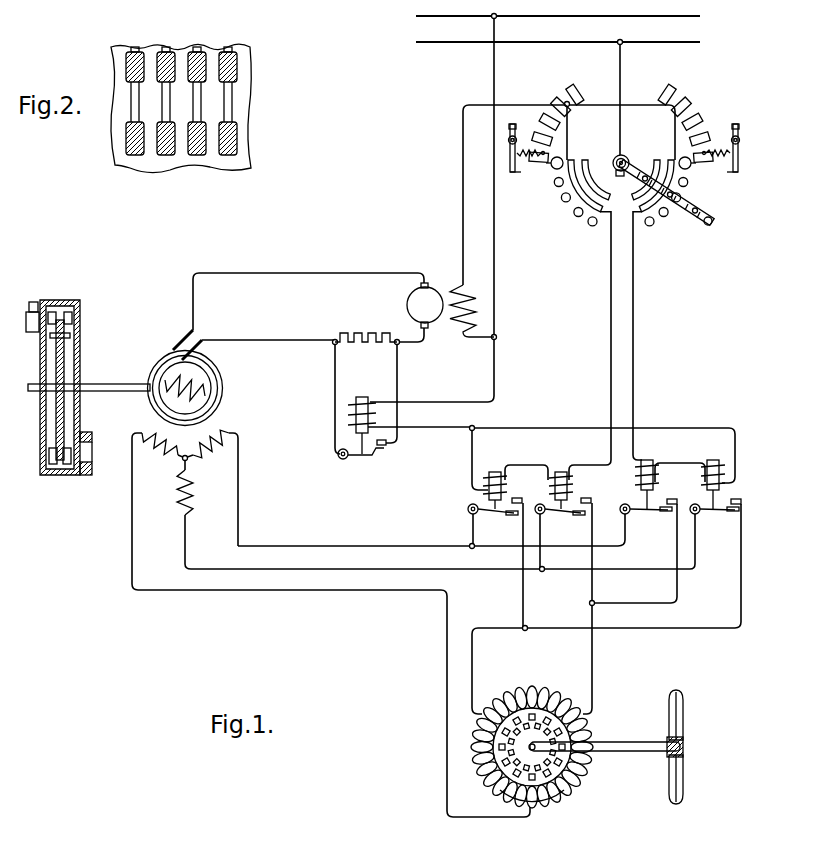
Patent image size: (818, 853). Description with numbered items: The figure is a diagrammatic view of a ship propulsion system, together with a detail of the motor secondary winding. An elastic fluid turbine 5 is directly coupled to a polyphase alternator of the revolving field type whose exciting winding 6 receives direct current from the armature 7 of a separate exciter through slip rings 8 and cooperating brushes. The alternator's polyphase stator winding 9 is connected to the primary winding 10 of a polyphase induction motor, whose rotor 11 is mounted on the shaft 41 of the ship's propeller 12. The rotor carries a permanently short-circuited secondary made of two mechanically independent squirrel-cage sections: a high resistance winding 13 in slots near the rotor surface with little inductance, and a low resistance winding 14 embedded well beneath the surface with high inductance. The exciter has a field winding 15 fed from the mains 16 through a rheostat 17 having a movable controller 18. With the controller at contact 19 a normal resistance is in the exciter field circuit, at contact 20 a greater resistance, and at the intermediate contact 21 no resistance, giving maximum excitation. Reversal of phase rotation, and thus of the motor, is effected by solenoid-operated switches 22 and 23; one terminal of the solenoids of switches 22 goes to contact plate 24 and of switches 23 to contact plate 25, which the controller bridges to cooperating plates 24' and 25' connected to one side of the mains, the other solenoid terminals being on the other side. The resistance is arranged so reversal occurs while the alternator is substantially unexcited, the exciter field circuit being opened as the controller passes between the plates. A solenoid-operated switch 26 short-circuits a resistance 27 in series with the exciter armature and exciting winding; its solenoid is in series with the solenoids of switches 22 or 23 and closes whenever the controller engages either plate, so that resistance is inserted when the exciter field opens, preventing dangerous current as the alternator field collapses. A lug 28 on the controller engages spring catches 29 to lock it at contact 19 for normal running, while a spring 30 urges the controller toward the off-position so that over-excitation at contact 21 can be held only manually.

In FIG. 1, the elastic fluid turbine 5 is at (80, 321).
In FIG. 1, the exciting winding 6 is at (198, 383).
In FIG. 1, the armature 7 is at (407, 305).
In FIG. 1, the slip rings 8 is at (215, 397).
In FIG. 1, the polyphase stator winding 9 is at (185, 472).
In FIG. 1, the primary winding 10 is at (585, 778).
In FIG. 1, the rotor 11 is at (568, 793).
In FIG. 1, the propeller 12 is at (684, 716).
In FIG. 2, the high resistance winding 13 is at (232, 62).
In FIG. 1, the high resistance winding 13 is at (518, 700).
In FIG. 2, the low resistance winding 14 is at (236, 137).
In FIG. 1, the low resistance winding 14 is at (540, 718).
In FIG. 1, the field winding 15 is at (478, 302).
In FIG. 1, the mains 16 is at (442, 17).
In FIG. 1, the rheostat 17 is at (620, 327).
In FIG. 1, the movable controller 18 is at (705, 225).
In FIG. 1, the contact 19 is at (557, 157).
In FIG. 1, the contact 20 is at (592, 226).
In FIG. 1, the contact 21 is at (542, 186).
In FIG. 1, the solenoid-operated switches 22 is at (660, 504).
In FIG. 1, the solenoid-operated switches 23 is at (499, 504).
In FIG. 1, the contact plate 24 is at (656, 171).
In FIG. 1, the cooperating plate 24' is at (643, 165).
In FIG. 1, the contact plate 25 is at (585, 171).
In FIG. 1, the cooperating plate 25' is at (594, 156).
In FIG. 1, the solenoid-operated switch 26 is at (355, 457).
In FIG. 1, the resistance 27 is at (365, 340).
In FIG. 1, the lug 28 is at (714, 222).
In FIG. 1, the spring catches 29 is at (511, 159).
In FIG. 1, the spring 30 is at (616, 156).
In FIG. 1, the shaft 41 is at (628, 736).